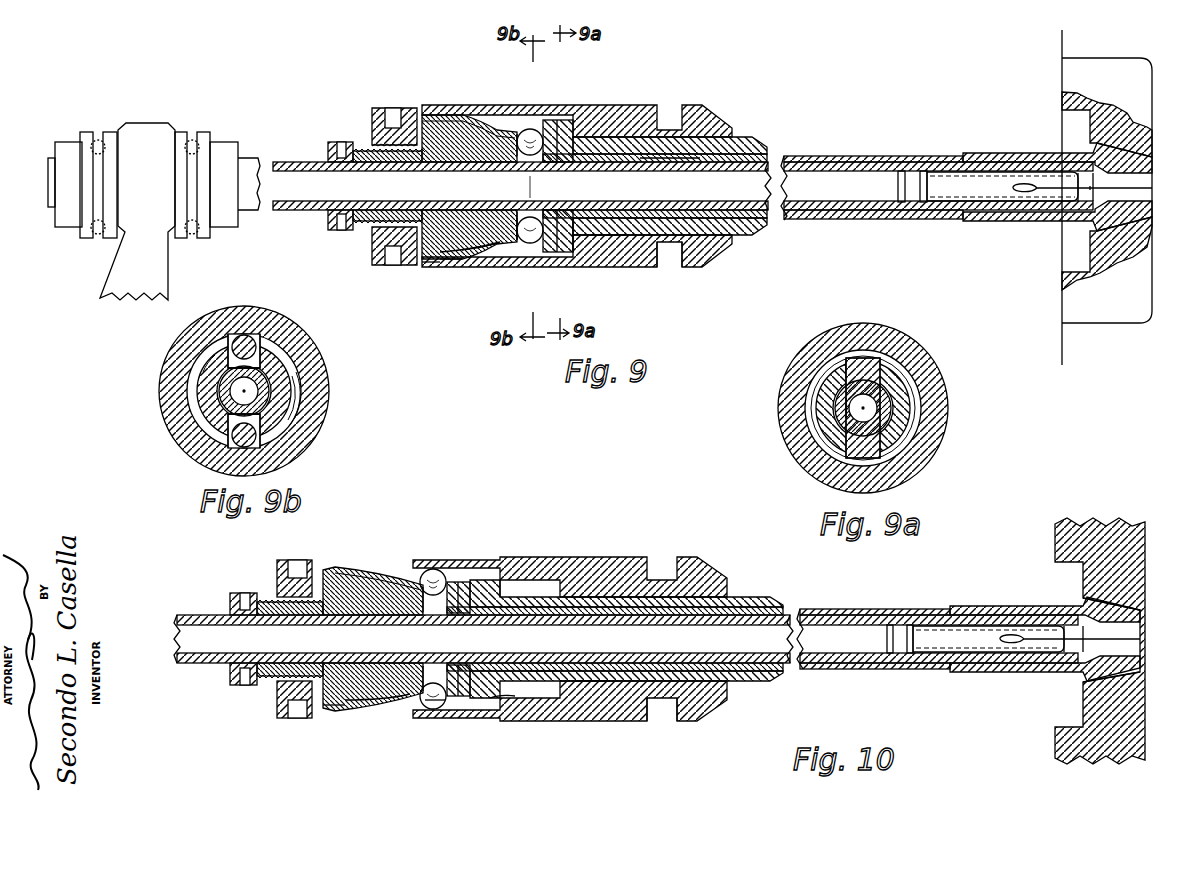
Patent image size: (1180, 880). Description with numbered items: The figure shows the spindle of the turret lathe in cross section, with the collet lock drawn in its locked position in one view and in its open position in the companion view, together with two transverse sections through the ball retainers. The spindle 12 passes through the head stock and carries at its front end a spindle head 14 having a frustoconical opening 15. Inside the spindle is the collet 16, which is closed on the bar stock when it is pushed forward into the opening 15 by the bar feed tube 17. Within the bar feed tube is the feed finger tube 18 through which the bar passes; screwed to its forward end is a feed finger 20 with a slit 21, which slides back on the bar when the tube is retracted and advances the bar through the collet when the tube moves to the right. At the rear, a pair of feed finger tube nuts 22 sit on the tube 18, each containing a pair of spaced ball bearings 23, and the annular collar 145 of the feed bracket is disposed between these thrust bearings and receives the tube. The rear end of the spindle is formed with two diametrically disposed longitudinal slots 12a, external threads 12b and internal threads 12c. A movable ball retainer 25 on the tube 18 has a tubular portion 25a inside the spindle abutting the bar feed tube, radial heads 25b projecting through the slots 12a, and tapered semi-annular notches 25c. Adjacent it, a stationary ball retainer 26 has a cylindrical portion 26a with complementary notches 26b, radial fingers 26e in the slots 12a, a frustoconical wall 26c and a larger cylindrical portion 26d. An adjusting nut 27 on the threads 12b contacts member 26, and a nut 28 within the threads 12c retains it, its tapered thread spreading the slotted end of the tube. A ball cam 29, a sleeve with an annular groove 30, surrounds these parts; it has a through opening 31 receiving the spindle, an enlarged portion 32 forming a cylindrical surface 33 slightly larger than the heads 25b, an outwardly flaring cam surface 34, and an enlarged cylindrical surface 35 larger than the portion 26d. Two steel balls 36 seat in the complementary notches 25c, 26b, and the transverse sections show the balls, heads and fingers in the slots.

In FIG. 9, the spindle 12 is at (745, 137).
In FIG. 9B, the spindle 12 is at (200, 378).
In FIG. 9A, the spindle 12 is at (908, 393).
In FIG. 10, the spindle 12 is at (753, 597).
In FIG. 9A, the longitudinal slots 12a is at (847, 370).
In FIG. 9, the external threads 12b is at (372, 238).
In FIG. 9, the internal threads 12c is at (372, 151).
In FIG. 9, the spindle head 14 is at (1113, 72).
In FIG. 10, the spindle head 14 is at (1087, 532).
In FIG. 9, the frustoconical opening 15 is at (1103, 143).
In FIG. 10, the frustoconical opening 15 is at (1073, 600).
In FIG. 9, the collet 16 is at (1000, 141).
In FIG. 10, the collet 16 is at (972, 596).
In FIG. 9, the bar feed tube 17 is at (881, 156).
In FIG. 10, the bar feed tube 17 is at (848, 609).
In FIG. 9, the feed finger tube 18 is at (278, 162).
In FIG. 9B, the feed finger tube 18 is at (265, 377).
In FIG. 9A, the feed finger tube 18 is at (882, 413).
In FIG. 10, the feed finger tube 18 is at (190, 615).
In FIG. 9, the feed finger 20 is at (939, 184).
In FIG. 10, the feed finger 20 is at (923, 637).
In FIG. 9, the slit 21 is at (1031, 192).
In FIG. 10, the slit 21 is at (1011, 645).
In FIG. 9, the feed finger tube nuts 22 is at (66, 142).
In FIG. 9, the ball bearings 23 is at (88, 132).
In FIG. 9, the movable ball retainer 25 is at (600, 122).
In FIG. 10, the movable ball retainer 25 is at (615, 639).
In FIG. 9, the tubular portion 25a is at (661, 155).
In FIG. 9A, the tubular portion 25a is at (840, 406).
In FIG. 10, the tubular portion 25a is at (483, 597).
In FIG. 9, the radial heads 25b is at (567, 126).
In FIG. 9A, the radial heads 25b is at (913, 348).
In FIG. 10, the radial heads 25b is at (460, 600).
In FIG. 9, the notches 25c is at (558, 128).
In FIG. 10, the notches 25c is at (447, 712).
In FIG. 9, the stationary ball retainer 26 is at (453, 128).
In FIG. 10, the stationary ball retainer 26 is at (348, 583).
In FIG. 9, the cylindrical portion 26a is at (498, 130).
In FIG. 9B, the cylindrical portion 26a is at (198, 357).
In FIG. 10, the cylindrical portion 26a is at (400, 585).
In FIG. 9, the notches 26b is at (520, 132).
In FIG. 9B, the notches 26b is at (265, 353).
In FIG. 10, the notches 26b is at (412, 698).
In FIG. 9, the frustoconical wall 26c is at (465, 262).
In FIG. 10, the frustoconical wall 26c is at (376, 702).
In FIG. 9, the cylindrical portion 26d is at (432, 266).
In FIG. 10, the cylindrical portion 26d is at (330, 703).
In FIG. 9B, the radial fingers 26e is at (262, 358).
In FIG. 10, the radial fingers 26e is at (275, 600).
In FIG. 9, the adjusting nut 27 is at (405, 108).
In FIG. 10, the adjusting nut 27 is at (303, 560).
In FIG. 9, the nut 28 is at (330, 218).
In FIG. 10, the nut 28 is at (234, 593).
In FIG. 9, the ball cam 29 is at (645, 94).
In FIG. 9B, the ball cam 29 is at (211, 311).
In FIG. 9A, the ball cam 29 is at (904, 312).
In FIG. 10, the ball cam 29 is at (591, 546).
In FIG. 9, the annular groove 30 is at (668, 264).
In FIG. 10, the annular groove 30 is at (661, 722).
In FIG. 9, the through opening 31 is at (607, 238).
In FIG. 10, the through opening 31 is at (586, 668).
In FIG. 9, the enlarged opening 32 is at (570, 238).
In FIG. 9A, the enlarged opening 32 is at (907, 437).
In FIG. 9, the cylindrical surface 33 is at (519, 248).
In FIG. 9B, the cylindrical surface 33 is at (312, 397).
In FIG. 10, the cylindrical surface 33 is at (538, 697).
In FIG. 9, the cam surface 34 is at (487, 252).
In FIG. 10, the cam surface 34 is at (501, 700).
In FIG. 9, the enlarged cylindrical surface 35 is at (447, 262).
In FIG. 10, the enlarged cylindrical surface 35 is at (434, 705).
In FIG. 9, the steel balls 36 is at (544, 243).
In FIG. 9B, the steel balls 36 is at (251, 338).
In FIG. 10, the steel balls 36 is at (434, 570).
In FIG. 9, the annular collar 145 is at (140, 123).